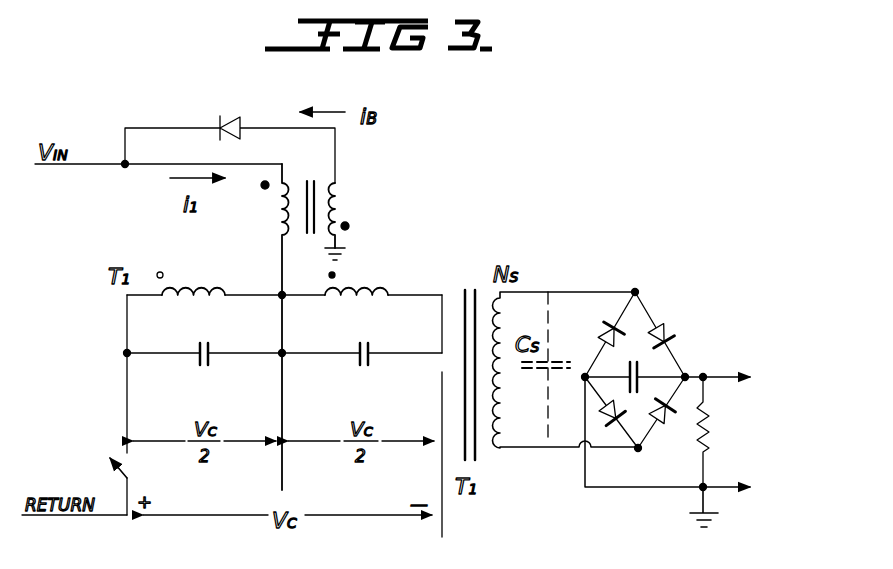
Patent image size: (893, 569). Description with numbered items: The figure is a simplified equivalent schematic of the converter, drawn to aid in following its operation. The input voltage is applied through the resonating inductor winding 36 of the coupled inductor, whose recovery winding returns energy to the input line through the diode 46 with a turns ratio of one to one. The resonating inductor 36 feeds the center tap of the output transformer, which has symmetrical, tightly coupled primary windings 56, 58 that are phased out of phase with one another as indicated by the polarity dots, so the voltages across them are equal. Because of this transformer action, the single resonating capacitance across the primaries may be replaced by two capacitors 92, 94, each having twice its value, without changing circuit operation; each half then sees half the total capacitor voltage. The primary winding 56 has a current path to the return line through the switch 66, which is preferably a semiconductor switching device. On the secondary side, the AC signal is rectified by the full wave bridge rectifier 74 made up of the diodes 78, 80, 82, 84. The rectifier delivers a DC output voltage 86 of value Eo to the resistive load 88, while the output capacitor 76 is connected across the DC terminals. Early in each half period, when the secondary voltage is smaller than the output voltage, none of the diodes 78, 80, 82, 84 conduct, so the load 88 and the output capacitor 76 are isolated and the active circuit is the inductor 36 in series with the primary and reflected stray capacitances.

The resonating inductor winding 36 is at (290, 183).
The diode 46 is at (230, 136).
The primary winding 56 is at (202, 283).
The primary winding 58 is at (378, 287).
The switch 66 is at (127, 470).
The full wave bridge rectifier 74 is at (655, 368).
The output capacitor 76 is at (628, 384).
The diode 78 is at (612, 333).
The diode 80 is at (672, 330).
The diode 82 is at (615, 418).
The diode 84 is at (672, 420).
The DC output voltage 86 is at (708, 384).
The load 88 is at (710, 430).
The capacitor 92 is at (214, 350).
The capacitor 94 is at (370, 345).